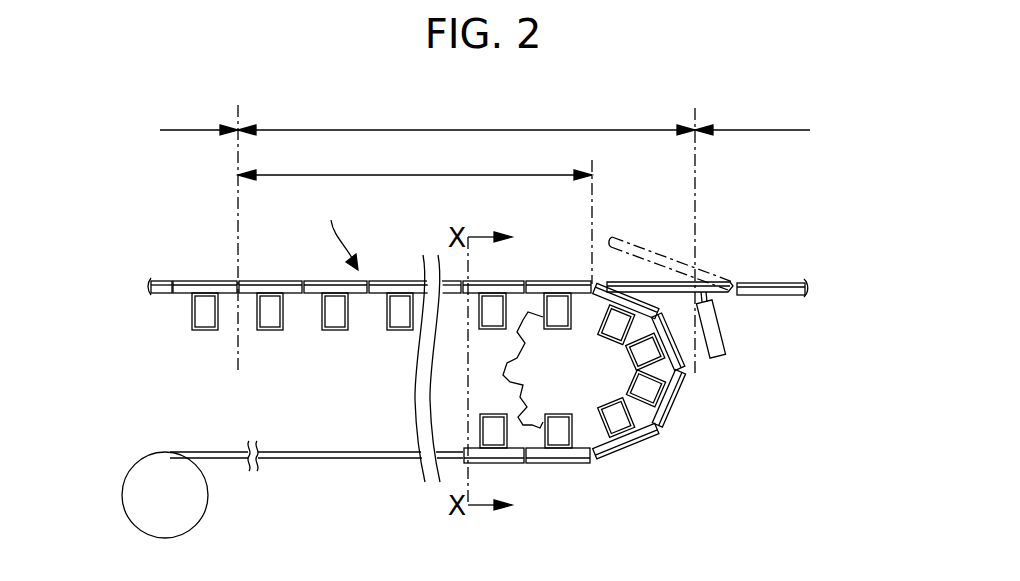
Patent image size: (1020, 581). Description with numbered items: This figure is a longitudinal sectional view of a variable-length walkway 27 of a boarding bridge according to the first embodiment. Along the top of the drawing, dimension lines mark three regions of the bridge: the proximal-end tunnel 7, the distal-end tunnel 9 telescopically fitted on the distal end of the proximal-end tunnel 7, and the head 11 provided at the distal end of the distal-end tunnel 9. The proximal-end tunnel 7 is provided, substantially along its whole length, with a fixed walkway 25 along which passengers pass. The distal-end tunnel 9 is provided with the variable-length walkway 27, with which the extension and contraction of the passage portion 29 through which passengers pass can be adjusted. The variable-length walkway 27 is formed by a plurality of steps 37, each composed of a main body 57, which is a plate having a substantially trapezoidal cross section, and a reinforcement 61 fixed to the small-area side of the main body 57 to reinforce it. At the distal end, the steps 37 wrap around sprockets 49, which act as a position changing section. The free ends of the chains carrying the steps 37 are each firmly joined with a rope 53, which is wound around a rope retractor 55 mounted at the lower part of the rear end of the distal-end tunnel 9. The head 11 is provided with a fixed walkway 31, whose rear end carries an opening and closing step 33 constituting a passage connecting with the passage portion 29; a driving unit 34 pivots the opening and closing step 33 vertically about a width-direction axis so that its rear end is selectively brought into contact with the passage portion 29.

The proximal-end tunnel 7 is at (188, 129).
The distal-end tunnel 9 is at (355, 129).
The head 11 is at (753, 129).
The fixed walkway 25 is at (369, 299).
The variable-length walkway 27 is at (336, 231).
The passage portion 29 is at (385, 174).
The fixed walkway 31 is at (782, 282).
The opening and closing step 33 is at (658, 287).
The driving unit 34 is at (716, 332).
The step 37 is at (302, 320).
The sprocket 49 is at (528, 425).
The rope 53 is at (355, 460).
The rope retractor 55 is at (208, 512).
The main body 57 is at (243, 297).
The reinforcement 61 is at (277, 331).